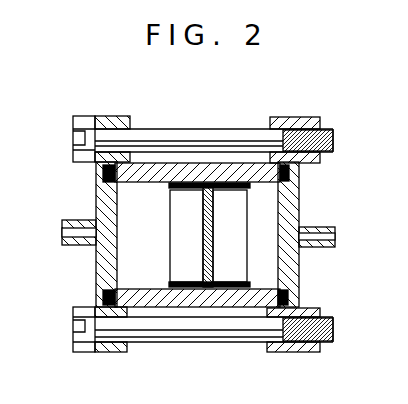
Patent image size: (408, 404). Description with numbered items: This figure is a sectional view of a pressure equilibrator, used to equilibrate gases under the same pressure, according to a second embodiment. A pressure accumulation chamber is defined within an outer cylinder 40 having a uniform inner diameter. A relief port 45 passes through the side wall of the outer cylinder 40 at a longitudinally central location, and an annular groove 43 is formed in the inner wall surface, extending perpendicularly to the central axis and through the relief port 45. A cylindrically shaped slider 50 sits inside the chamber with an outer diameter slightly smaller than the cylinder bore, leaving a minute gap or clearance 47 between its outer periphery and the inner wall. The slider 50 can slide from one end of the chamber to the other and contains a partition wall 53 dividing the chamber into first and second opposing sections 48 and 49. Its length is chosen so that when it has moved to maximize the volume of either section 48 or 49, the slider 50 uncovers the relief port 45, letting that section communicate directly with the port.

The outer cylinder 40 is at (242, 170).
The annular groove 43 is at (197, 185).
The relief port 45 is at (196, 288).
The gap or clearance 47 is at (170, 185).
The first section 48 is at (137, 275).
The second section 49 is at (265, 276).
The slider 50 is at (170, 248).
The partition wall 53 is at (214, 268).